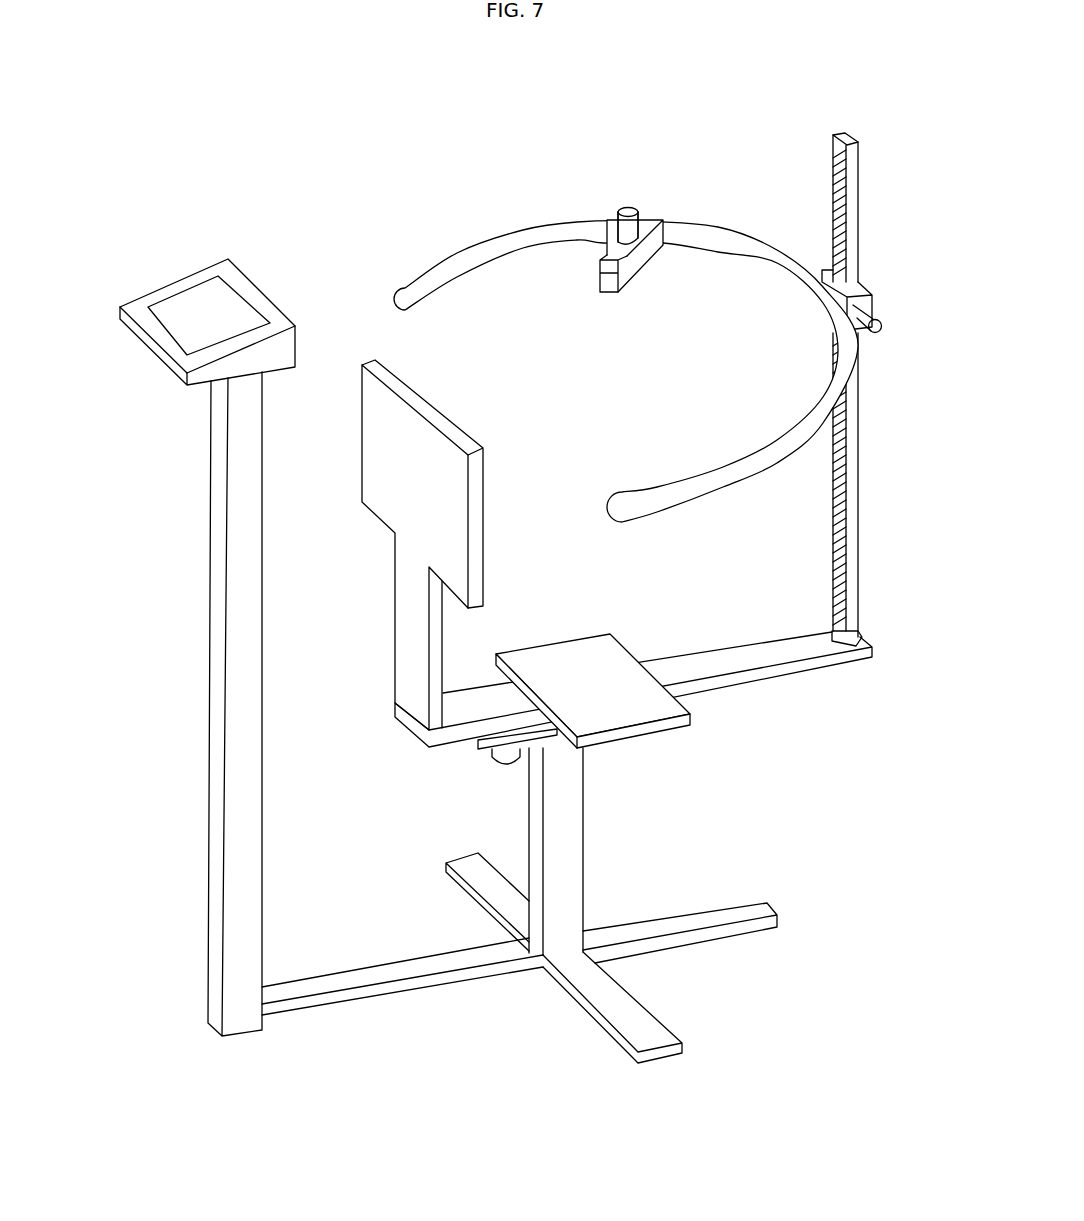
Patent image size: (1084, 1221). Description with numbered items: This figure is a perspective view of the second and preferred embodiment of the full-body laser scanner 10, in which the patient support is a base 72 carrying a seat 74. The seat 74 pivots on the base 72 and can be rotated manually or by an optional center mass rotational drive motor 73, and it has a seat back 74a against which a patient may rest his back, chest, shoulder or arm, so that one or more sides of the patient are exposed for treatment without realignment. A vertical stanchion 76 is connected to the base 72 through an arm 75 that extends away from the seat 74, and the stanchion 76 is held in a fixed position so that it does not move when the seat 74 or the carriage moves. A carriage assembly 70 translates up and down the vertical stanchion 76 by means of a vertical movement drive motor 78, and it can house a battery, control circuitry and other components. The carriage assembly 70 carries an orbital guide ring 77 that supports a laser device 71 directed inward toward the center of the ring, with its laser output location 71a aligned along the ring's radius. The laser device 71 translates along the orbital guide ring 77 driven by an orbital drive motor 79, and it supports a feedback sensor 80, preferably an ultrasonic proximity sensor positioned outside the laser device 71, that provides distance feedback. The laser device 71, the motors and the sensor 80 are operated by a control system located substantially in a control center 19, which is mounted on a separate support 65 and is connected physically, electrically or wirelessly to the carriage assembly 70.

The full-body laser scanner 10 is at (402, 166).
The control center 19 is at (183, 355).
The support 65 is at (243, 838).
The carriage assembly 70 is at (822, 272).
The laser device 71 is at (640, 262).
The laser output location 71a is at (608, 287).
The base 72 is at (563, 908).
The center mass rotational drive motor 73 is at (508, 753).
The seat 74 is at (633, 717).
The seat back 74a is at (388, 490).
The arm 75 is at (738, 664).
The vertical stanchion 76 is at (837, 136).
The orbital guide ring 77 is at (723, 478).
The vertical movement drive motor 78 is at (877, 330).
The orbital drive motor 79 is at (628, 207).
The feedback sensor 80 is at (610, 260).